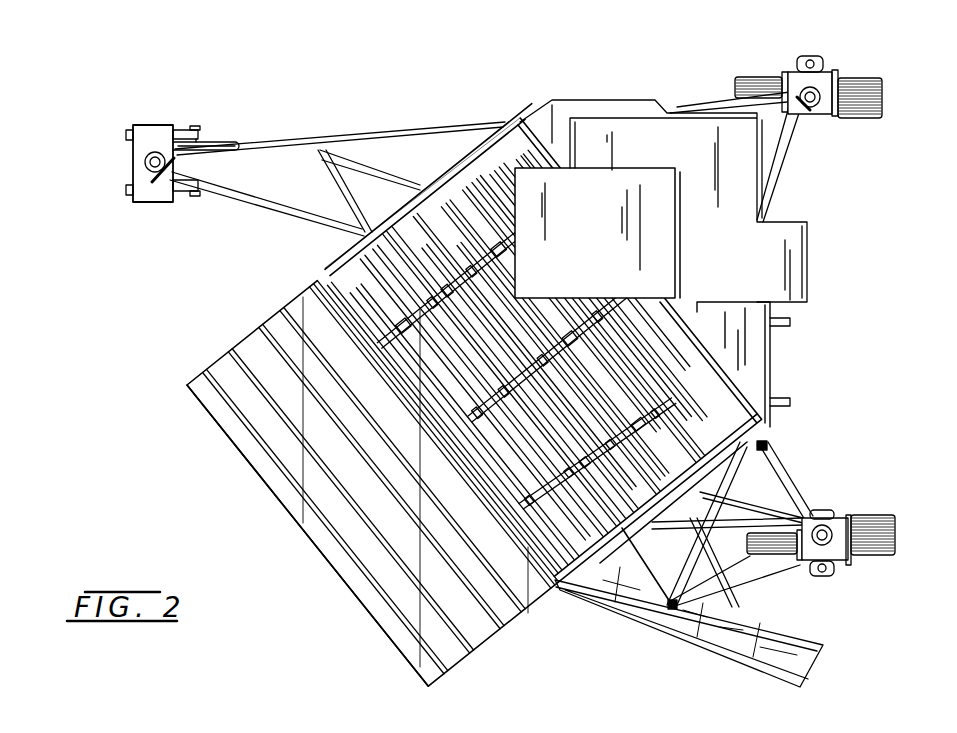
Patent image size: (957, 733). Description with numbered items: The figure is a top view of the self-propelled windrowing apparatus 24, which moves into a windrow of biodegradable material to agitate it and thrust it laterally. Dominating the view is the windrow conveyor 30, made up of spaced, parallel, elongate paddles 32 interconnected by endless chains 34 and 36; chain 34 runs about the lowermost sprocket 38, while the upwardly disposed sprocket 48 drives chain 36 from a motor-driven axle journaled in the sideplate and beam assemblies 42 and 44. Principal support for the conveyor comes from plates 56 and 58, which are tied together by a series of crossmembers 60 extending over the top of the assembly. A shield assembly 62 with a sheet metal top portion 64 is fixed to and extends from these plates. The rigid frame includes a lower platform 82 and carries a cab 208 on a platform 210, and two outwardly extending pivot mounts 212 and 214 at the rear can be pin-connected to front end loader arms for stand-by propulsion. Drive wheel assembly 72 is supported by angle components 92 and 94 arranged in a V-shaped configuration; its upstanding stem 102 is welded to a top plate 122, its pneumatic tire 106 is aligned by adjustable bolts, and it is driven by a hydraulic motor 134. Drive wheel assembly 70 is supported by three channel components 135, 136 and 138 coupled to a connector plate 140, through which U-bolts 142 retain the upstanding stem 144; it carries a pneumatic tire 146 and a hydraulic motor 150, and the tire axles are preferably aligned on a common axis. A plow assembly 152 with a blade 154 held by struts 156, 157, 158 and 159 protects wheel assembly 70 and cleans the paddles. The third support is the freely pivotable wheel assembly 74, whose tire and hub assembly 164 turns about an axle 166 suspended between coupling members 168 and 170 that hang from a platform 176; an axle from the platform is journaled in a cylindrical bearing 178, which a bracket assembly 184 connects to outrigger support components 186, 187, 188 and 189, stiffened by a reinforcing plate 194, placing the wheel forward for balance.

The windrowing apparatus 24 is at (515, 70).
The windrow conveyor 30 is at (525, 644).
The paddles or flights 32 is at (507, 165).
The endless chain 34 is at (470, 287).
The endless chain 36 is at (604, 432).
The sprocket 38 is at (520, 250).
The sideplate and beam assembly 42 is at (467, 264).
The sideplate and beam assembly 44 is at (620, 450).
The sprocket 48 is at (670, 373).
The plate 56 is at (651, 537).
The plate 58 is at (340, 266).
The crossmembers 60 is at (502, 367).
The shield assembly 62 is at (225, 448).
The sheet metal top portion 64 is at (352, 560).
The drive wheel assembly 70 is at (904, 480).
The drive wheel assembly 72 is at (846, 47).
The wheel assembly 74 is at (215, 98).
The lower platform 82 is at (776, 348).
The angle component 92 is at (706, 110).
The angle component 94 is at (775, 170).
The upstanding stem 102 is at (820, 110).
The pneumatic tire 106 is at (746, 77).
The top plate 122 is at (822, 80).
The hydraulic motor 134 is at (805, 56).
The channel component 135 is at (770, 449).
The channel component 136 is at (747, 548).
The channel component 138 is at (780, 471).
The connector plate 140 is at (826, 512).
The U-bolts 142 is at (831, 527).
The upstanding stem 144 is at (825, 518).
The pneumatic tire 146 is at (866, 540).
The hydraulic motor 150 is at (823, 578).
The plow assembly 152 is at (712, 634).
The blade 154 is at (807, 665).
The strut 156 is at (658, 588).
The strut 157 is at (723, 563).
The strut 158 is at (733, 580).
The strut 159 is at (737, 600).
The tire and hub assembly 164 is at (241, 142).
The axle 166 is at (200, 128).
The coupling member 168 is at (187, 130).
The coupling member 170 is at (186, 192).
The platform 176 is at (152, 200).
The cylindrical bearing 178 is at (140, 176).
The bracket assembly 184 is at (145, 158).
The support component 186 is at (370, 150).
The support component 187 is at (413, 180).
The support component 188 is at (247, 212).
The support component 189 is at (358, 198).
The reinforcing plate 194 is at (298, 150).
The cab 208 is at (647, 187).
The platform 210 is at (626, 130).
The pivot mount 212 is at (791, 321).
The pivot mount 214 is at (791, 402).